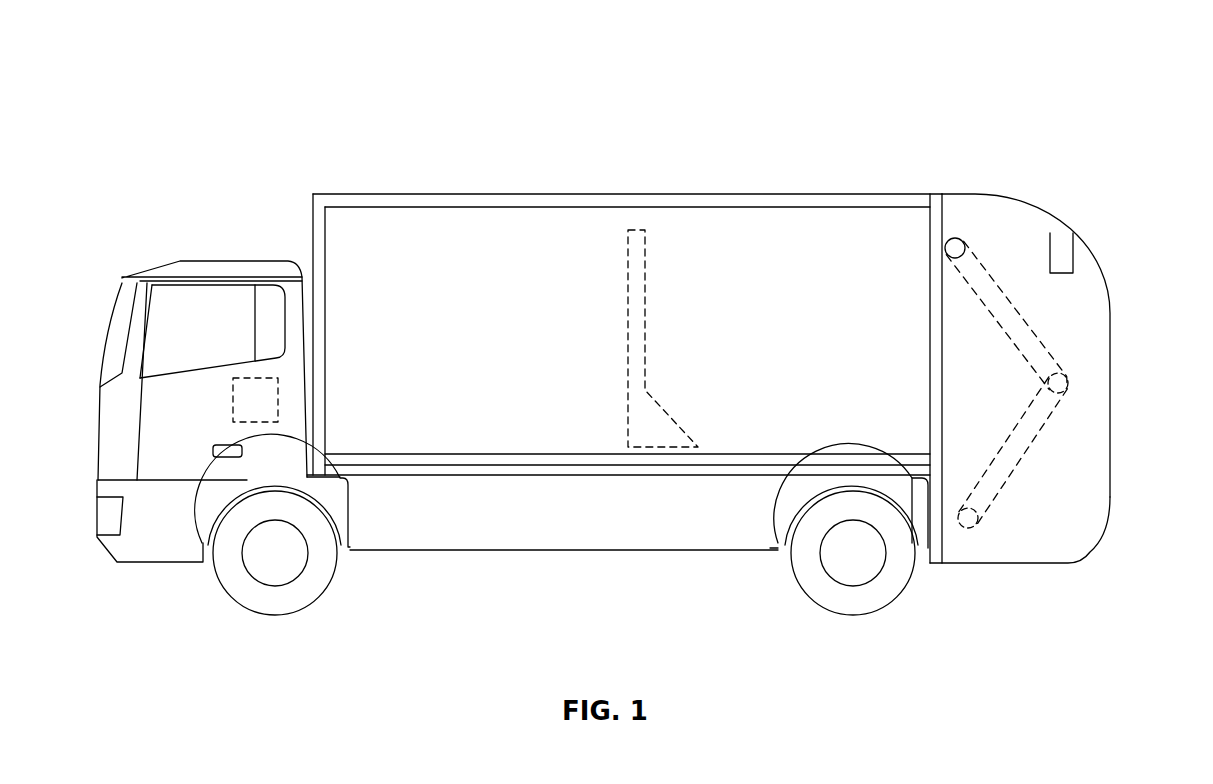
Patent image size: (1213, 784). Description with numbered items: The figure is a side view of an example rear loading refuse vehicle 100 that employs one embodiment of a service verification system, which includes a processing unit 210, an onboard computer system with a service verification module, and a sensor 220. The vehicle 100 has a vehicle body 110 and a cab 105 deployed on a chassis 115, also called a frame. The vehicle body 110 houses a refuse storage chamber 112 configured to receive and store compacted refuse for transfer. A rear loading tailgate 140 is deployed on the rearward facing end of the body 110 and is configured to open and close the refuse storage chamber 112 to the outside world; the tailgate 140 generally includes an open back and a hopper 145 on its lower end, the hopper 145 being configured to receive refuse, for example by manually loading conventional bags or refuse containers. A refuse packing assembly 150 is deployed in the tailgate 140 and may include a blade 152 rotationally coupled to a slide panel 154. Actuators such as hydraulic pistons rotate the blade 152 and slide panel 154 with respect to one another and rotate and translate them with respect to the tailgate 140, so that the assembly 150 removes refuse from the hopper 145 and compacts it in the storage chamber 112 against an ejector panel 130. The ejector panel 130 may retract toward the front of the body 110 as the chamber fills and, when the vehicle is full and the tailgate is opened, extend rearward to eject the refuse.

The rear loading refuse vehicle 100 is at (1054, 100).
The cab 105 is at (178, 258).
The vehicle body 110 is at (537, 194).
The refuse storage chamber 112 is at (836, 360).
The chassis 115 is at (472, 518).
The ejector panel 130 is at (638, 312).
The rear loading tailgate 140 is at (968, 194).
The hopper 145 is at (1044, 536).
The refuse packing assembly 150 is at (1048, 350).
The blade 152 is at (993, 463).
The slide panel 154 is at (992, 316).
The processing unit 210 is at (250, 392).
The sensor 220 is at (1063, 258).